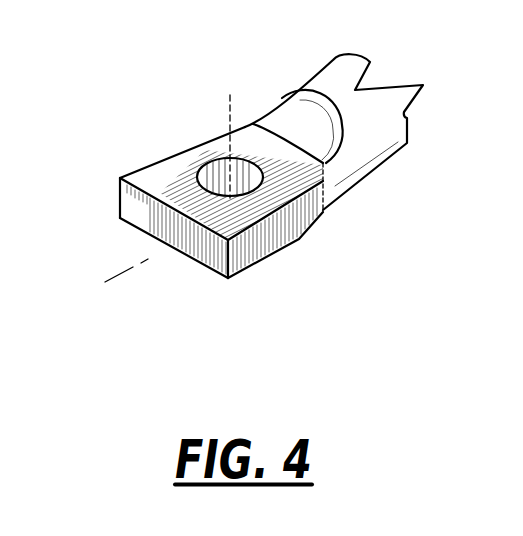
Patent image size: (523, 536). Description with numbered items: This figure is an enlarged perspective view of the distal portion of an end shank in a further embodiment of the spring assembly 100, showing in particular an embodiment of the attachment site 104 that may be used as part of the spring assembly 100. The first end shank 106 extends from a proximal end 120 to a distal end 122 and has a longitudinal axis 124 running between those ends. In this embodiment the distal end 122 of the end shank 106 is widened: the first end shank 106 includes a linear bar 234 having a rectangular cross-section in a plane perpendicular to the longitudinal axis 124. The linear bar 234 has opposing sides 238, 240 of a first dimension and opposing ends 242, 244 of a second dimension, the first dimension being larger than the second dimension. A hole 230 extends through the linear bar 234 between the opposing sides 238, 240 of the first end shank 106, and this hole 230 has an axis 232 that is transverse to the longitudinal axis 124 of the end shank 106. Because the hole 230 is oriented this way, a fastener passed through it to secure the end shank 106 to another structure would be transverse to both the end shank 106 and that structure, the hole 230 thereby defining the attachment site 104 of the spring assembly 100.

The spring assembly 100 is at (314, 51).
The attachment site 104 is at (314, 249).
The first end shank 106 is at (173, 156).
The proximal end 120 is at (241, 129).
The distal end 122 is at (137, 177).
The longitudinal axis 124 is at (171, 236).
The hole 230 is at (247, 172).
The axis 232 is at (230, 100).
The linear bar 234 is at (302, 198).
The opposing side 238 is at (166, 212).
The opposing side 240 is at (200, 262).
The opposing end 242 is at (118, 192).
The opposing end 244 is at (232, 255).